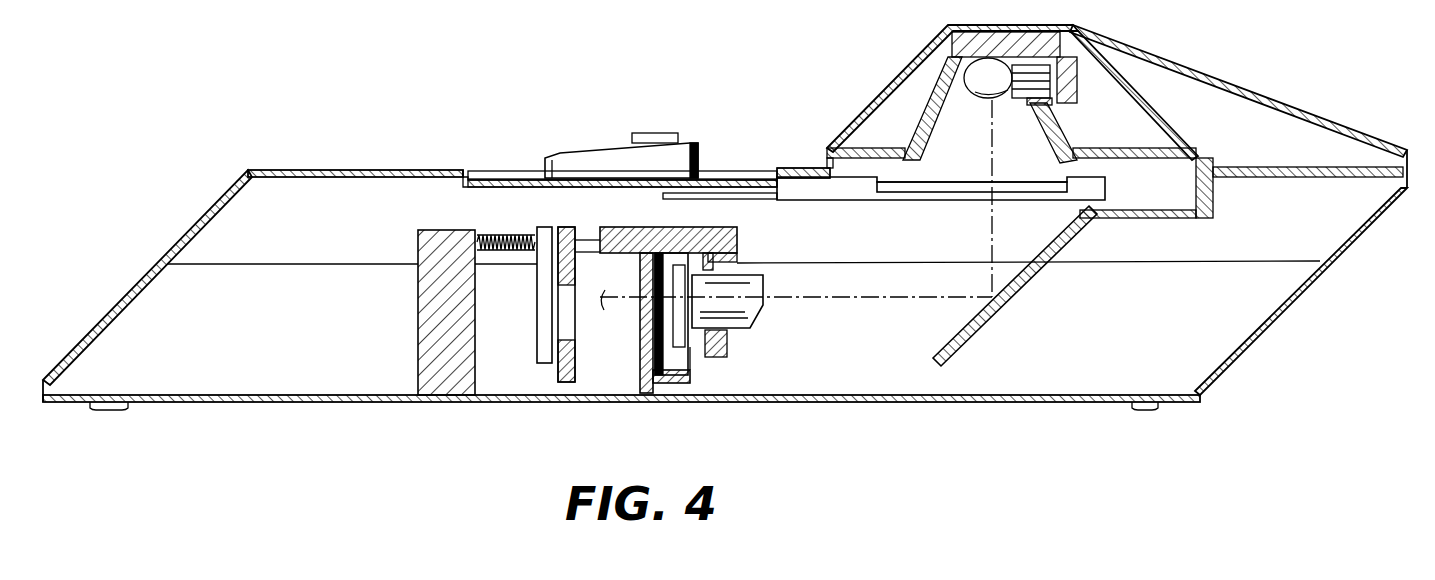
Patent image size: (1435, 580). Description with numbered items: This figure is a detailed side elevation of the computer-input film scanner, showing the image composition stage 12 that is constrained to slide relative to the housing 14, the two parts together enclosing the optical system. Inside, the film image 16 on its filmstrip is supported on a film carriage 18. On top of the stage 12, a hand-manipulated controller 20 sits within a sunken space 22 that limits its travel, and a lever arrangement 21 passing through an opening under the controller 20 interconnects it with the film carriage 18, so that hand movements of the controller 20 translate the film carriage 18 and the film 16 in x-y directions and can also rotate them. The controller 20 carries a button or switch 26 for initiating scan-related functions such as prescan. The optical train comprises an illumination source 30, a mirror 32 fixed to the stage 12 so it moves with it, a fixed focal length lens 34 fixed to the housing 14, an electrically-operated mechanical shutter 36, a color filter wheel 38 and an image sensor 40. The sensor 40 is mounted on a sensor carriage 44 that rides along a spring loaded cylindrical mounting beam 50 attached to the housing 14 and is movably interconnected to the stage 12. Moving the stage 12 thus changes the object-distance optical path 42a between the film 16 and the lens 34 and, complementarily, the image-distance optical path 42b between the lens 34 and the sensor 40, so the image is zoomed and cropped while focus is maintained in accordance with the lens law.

The image composition stage 12 is at (357, 168).
The housing 14 is at (120, 300).
The film image 16 is at (1012, 183).
The film carriage 18 is at (1108, 190).
The hand-manipulated controller 20 is at (585, 150).
The lever arrangement 21 is at (762, 208).
The sunken space 22 is at (497, 172).
The button or switch 26 is at (660, 133).
The illumination source 30 is at (978, 98).
The mirror 32 is at (955, 335).
The fixed focal length lens 34 is at (748, 326).
The electrically-operated mechanical shutter 36 is at (693, 355).
The color filter wheel 38 is at (665, 300).
The image sensor 40 is at (537, 295).
The optical path (object distance) 42a is at (992, 210).
The optical path (image distance) 42b is at (575, 362).
The sensor carriage 44 is at (565, 228).
The spring loaded cylindrical mounting beam 50 is at (597, 233).